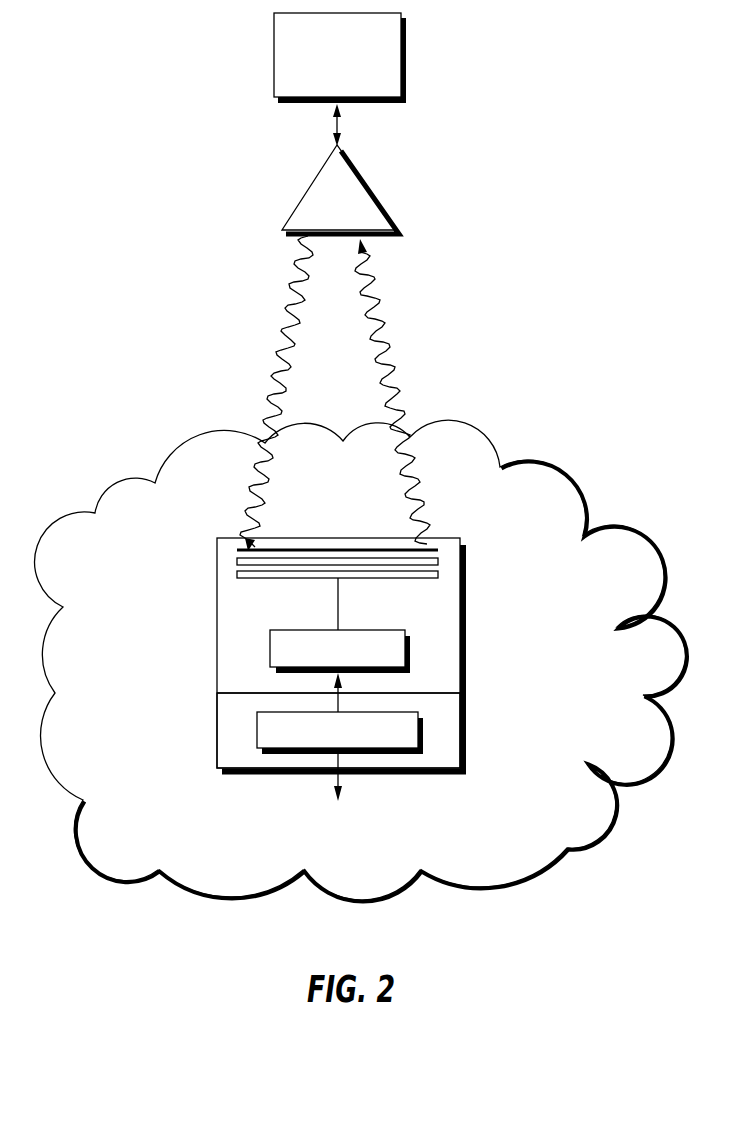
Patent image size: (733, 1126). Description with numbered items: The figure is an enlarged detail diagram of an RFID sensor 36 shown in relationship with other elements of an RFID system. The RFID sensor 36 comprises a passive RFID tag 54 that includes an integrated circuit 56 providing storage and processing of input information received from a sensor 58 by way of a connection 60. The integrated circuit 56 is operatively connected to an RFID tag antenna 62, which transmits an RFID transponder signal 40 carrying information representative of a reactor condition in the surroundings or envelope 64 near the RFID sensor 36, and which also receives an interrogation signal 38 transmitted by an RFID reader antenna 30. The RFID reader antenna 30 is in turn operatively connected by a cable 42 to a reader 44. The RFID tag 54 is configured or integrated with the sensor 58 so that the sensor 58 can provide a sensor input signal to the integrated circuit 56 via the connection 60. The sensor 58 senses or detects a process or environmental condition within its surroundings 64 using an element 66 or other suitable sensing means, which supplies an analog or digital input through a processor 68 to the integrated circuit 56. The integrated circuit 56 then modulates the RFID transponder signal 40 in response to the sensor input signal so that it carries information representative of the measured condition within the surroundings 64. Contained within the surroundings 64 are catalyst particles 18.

The catalyst particles 18 is at (95, 513).
The RFID reader antenna 30 is at (307, 188).
The RFID sensor 36 is at (488, 572).
The interrogation signal 38 is at (279, 350).
The RFID transponder signal 40 is at (392, 341).
The cable 42 is at (340, 125).
The reader 44 is at (274, 57).
The passive RFID tag 54 is at (216, 618).
The integrated circuit 56 is at (270, 648).
The sensor 58 is at (217, 730).
The connection 60 is at (340, 703).
The RFID tag antenna 62 is at (237, 574).
The surroundings 64 is at (115, 676).
The element 66 is at (335, 783).
The processor 68 is at (257, 730).